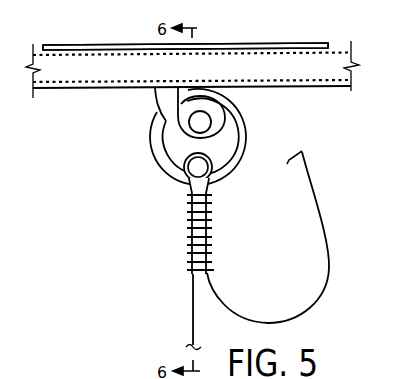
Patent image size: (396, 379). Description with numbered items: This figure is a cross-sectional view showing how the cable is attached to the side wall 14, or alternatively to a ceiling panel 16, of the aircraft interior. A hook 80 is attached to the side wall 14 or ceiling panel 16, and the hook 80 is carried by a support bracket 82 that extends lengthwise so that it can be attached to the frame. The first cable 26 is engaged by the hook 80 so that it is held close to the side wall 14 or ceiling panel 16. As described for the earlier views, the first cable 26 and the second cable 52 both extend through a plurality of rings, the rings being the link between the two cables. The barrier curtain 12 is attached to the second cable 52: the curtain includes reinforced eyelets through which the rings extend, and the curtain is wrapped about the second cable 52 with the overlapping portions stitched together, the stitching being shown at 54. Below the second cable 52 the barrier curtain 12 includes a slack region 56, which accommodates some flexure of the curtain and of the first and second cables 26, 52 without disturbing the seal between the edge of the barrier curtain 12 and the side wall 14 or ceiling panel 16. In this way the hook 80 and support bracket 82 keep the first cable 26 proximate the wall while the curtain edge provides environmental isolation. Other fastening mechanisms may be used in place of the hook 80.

The side wall 14 is at (217, 43).
The ceiling panel 16 is at (185, 46).
The support bracket 82 is at (339, 88).
The hook 80 is at (156, 98).
The first cable 26 is at (201, 122).
The second cable 52 is at (198, 167).
The stitching 54 is at (208, 237).
The barrier curtain 12 is at (192, 306).
The slack region 56 is at (297, 317).